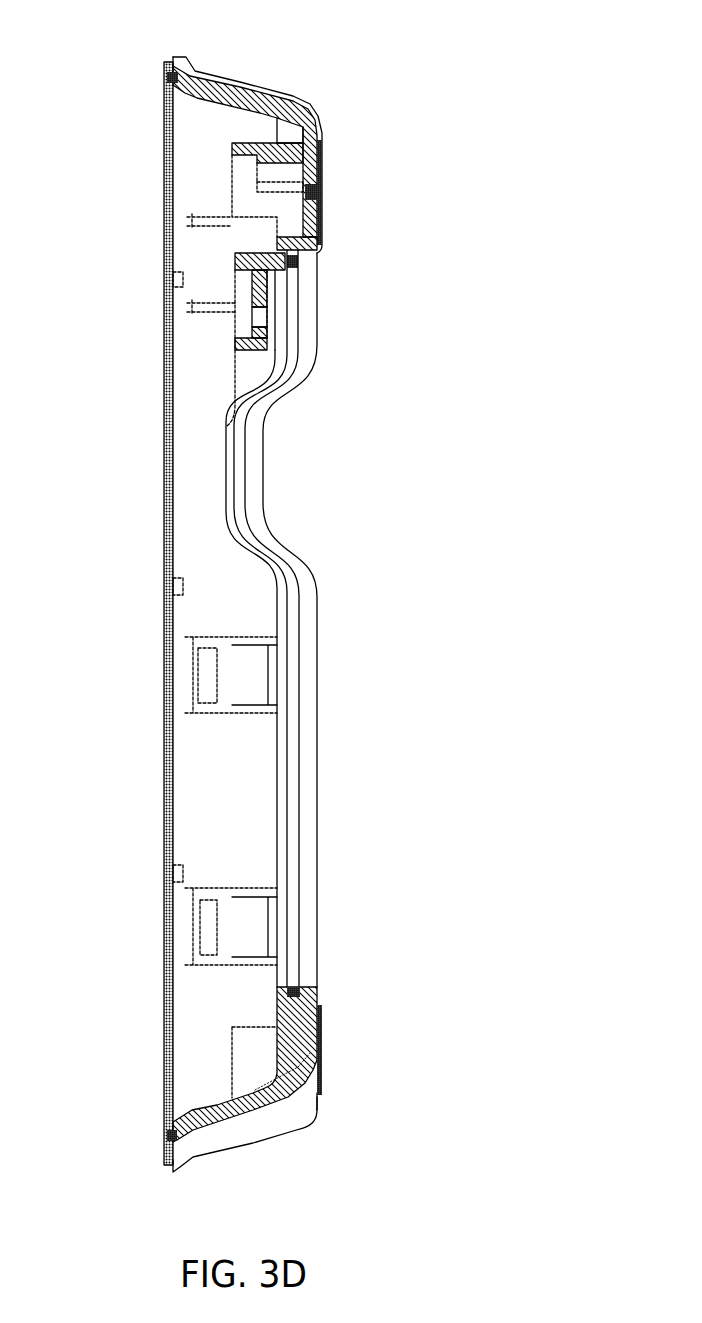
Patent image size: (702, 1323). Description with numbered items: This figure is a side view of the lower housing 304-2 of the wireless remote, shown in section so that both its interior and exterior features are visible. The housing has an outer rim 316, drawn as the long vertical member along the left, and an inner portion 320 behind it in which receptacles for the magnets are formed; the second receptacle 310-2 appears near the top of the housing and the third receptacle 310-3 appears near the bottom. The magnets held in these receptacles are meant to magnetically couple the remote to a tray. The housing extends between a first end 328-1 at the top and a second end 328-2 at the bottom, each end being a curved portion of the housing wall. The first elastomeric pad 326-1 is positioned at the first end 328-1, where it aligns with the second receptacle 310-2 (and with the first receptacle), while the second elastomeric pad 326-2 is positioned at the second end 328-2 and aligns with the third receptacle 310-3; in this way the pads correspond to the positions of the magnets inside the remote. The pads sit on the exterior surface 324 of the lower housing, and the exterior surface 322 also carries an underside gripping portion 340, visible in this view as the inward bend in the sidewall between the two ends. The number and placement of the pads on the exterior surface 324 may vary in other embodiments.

The lower housing 304-2 is at (205, 118).
The first end 328-1 is at (284, 66).
The first elastomeric pad 326-1 is at (323, 188).
The second receptacle 310-2 is at (277, 207).
The underside gripping portion 340 is at (280, 473).
The exterior surface 324 is at (320, 726).
The exterior surface 322 is at (330, 828).
The outer rim 316 is at (165, 750).
The inner portion 320 is at (212, 803).
The second elastomeric pad 326-2 is at (323, 1037).
The second end 328-2 is at (332, 1113).
The third receptacle 310-3 is at (257, 1060).